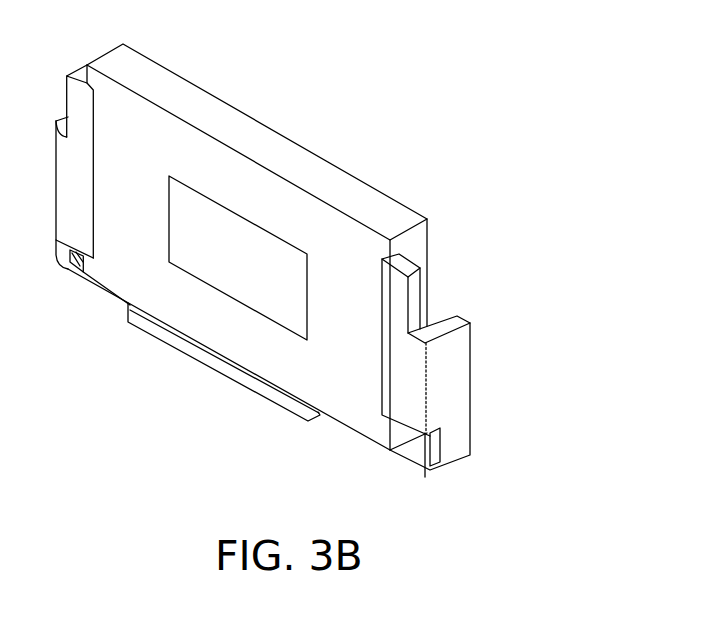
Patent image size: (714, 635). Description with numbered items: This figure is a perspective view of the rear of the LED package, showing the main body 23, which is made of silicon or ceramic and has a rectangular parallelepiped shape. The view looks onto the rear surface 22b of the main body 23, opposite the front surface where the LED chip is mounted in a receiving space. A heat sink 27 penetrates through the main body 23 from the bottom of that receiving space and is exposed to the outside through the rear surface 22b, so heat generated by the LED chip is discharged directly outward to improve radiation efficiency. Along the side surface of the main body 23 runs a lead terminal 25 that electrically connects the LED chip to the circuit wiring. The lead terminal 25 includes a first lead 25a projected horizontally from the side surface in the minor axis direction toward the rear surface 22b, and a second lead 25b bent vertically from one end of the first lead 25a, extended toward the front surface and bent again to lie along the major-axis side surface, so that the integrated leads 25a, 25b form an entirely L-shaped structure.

The main body 23 is at (382, 208).
The rear surface 22b is at (133, 255).
The heat sink 27 is at (268, 310).
The lead terminal 25 is at (509, 375).
The first lead 25a is at (431, 292).
The second lead 25b is at (461, 352).